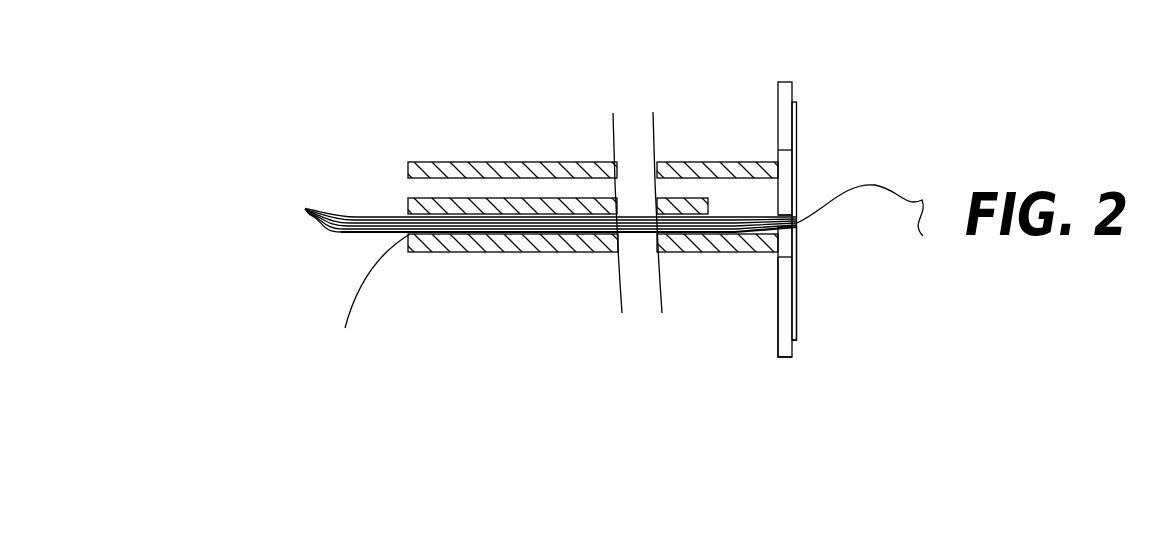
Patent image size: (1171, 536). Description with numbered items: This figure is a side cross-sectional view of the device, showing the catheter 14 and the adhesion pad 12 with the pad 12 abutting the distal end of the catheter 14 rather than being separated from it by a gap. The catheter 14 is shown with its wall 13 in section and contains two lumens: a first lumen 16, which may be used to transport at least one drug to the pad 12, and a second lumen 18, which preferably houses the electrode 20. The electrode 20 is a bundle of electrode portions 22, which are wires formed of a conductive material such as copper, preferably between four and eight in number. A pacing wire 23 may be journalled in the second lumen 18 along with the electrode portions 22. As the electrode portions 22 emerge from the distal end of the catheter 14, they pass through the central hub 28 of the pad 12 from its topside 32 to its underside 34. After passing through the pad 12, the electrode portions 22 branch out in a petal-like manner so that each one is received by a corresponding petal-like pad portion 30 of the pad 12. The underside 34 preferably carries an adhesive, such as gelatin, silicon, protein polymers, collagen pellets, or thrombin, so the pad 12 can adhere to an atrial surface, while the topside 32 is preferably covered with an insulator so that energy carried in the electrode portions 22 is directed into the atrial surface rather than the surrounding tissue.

The adhesion pad 12 is at (788, 242).
The outer tube wall 13 is at (428, 162).
The catheter 14 is at (497, 162).
The first lumen 16 is at (408, 190).
The second lumen 18 is at (403, 229).
The electrode 20 is at (474, 232).
The electrode portions 22 is at (840, 97).
The pacing wire 23 is at (355, 302).
The central hub 28 is at (788, 197).
The petal-like pad portion 30 is at (784, 85).
The topside 32 is at (780, 297).
The underside 34 is at (797, 350).